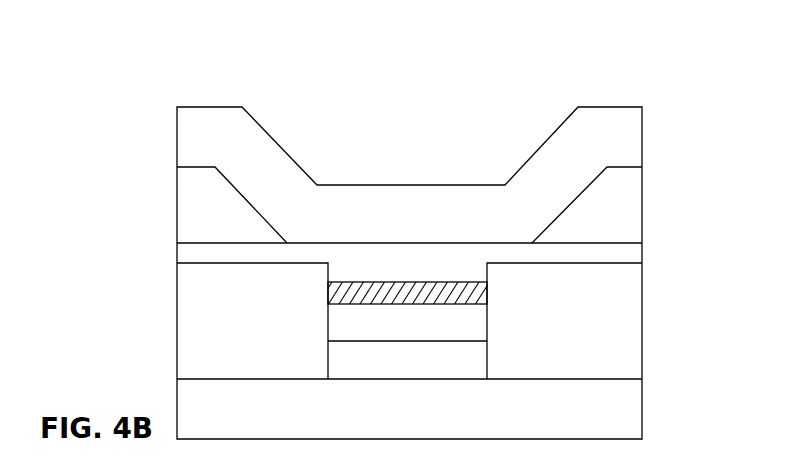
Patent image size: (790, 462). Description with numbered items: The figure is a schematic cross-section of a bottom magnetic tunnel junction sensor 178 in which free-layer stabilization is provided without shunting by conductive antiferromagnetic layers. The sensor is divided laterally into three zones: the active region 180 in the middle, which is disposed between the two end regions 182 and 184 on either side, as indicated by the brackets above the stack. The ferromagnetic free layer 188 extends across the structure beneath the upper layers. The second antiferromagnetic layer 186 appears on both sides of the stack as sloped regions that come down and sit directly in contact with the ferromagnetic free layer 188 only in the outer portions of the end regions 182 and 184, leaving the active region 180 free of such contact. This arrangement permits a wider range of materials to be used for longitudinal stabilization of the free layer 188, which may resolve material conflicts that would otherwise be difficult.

The bottom MTJ sensor 178 is at (143, 118).
The active region 180 is at (333, 97).
The end region 182 is at (177, 97).
The end region 184 is at (642, 97).
The second AFM layer 186 is at (185, 188).
The FM free layer 188 is at (185, 253).